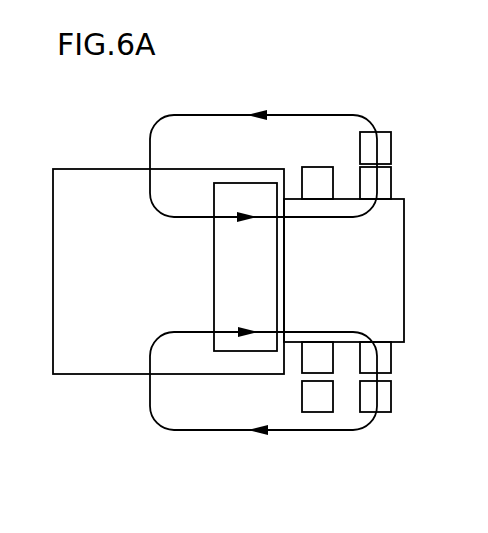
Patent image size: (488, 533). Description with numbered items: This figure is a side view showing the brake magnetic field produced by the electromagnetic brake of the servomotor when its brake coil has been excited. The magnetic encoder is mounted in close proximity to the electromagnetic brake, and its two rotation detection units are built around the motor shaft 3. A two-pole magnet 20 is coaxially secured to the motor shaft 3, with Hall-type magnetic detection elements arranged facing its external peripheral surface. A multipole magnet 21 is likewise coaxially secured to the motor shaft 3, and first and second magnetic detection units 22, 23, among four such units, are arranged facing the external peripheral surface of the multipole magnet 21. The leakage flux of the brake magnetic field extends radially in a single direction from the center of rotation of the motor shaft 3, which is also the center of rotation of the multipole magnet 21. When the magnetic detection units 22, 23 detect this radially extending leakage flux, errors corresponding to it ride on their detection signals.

The motor shaft 3 is at (404, 320).
The two-pole magnet 20 is at (302, 176).
The multipole magnet 21 is at (392, 180).
The first magnetic detection unit 22 is at (392, 150).
The second magnetic detection unit 23 is at (392, 395).